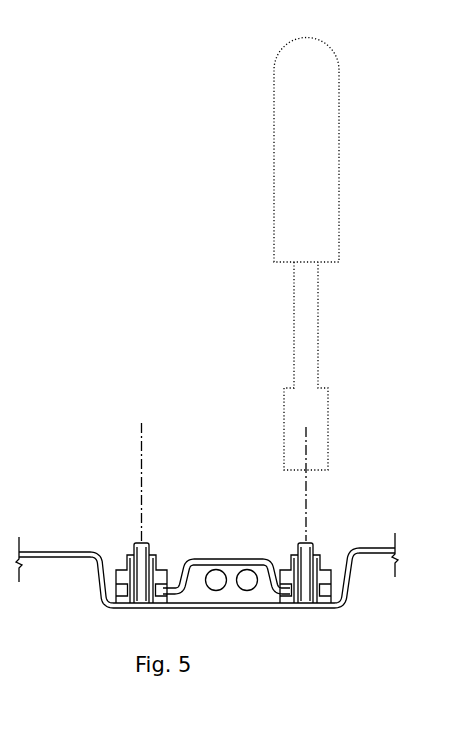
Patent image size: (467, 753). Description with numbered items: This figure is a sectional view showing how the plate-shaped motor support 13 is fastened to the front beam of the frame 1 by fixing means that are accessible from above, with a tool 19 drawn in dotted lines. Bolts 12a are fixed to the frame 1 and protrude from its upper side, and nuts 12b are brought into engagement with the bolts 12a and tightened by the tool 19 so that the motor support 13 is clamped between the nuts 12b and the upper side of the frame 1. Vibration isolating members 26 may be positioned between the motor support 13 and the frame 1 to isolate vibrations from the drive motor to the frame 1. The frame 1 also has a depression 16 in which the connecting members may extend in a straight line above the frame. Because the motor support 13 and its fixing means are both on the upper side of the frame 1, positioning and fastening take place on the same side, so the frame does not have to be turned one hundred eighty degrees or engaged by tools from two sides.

The frame 1 is at (230, 567).
The bolts 12a is at (372, 537).
The nuts 12b is at (368, 579).
The motor support 13 is at (213, 559).
The depression 16 is at (338, 607).
The tool 19 is at (330, 218).
The vibration isolating members 26 is at (123, 600).